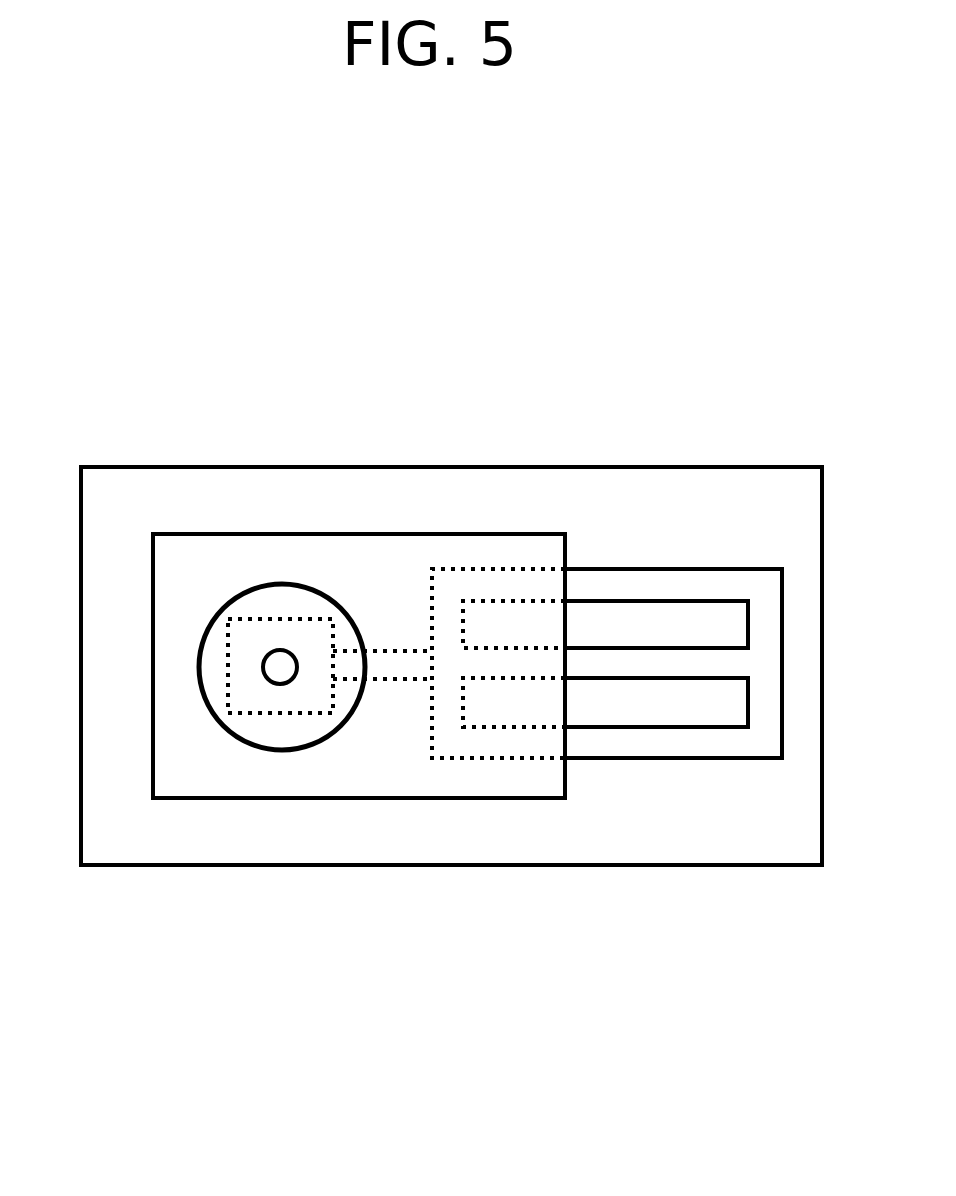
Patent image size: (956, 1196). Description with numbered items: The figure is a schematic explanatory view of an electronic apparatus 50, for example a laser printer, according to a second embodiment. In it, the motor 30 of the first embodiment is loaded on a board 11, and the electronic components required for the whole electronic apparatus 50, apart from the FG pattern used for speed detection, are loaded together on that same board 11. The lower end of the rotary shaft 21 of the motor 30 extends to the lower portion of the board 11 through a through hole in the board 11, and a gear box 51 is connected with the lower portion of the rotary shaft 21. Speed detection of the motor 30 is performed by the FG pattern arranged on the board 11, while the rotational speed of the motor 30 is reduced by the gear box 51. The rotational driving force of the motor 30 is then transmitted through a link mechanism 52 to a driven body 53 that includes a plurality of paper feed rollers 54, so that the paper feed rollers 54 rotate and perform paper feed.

The electronic apparatus 50 is at (143, 488).
The board 11 is at (238, 553).
The motor 30 is at (308, 602).
The rotary shaft 21 is at (278, 663).
The gear box 51 is at (303, 703).
The link mechanism 52 is at (388, 668).
The driven body 53 is at (592, 567).
The paper feed rollers 54 is at (708, 625).